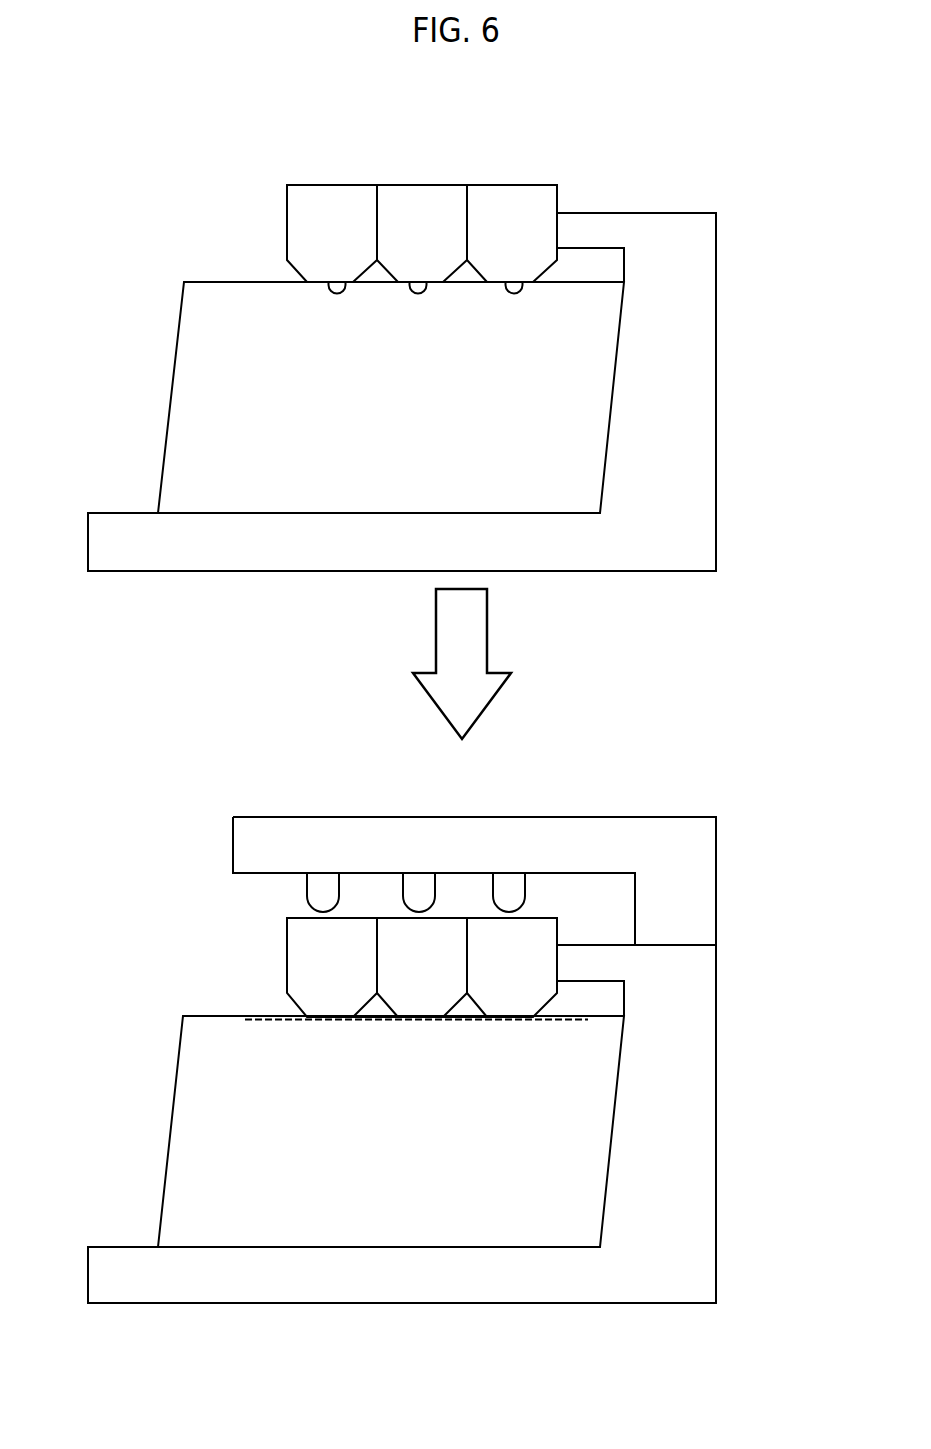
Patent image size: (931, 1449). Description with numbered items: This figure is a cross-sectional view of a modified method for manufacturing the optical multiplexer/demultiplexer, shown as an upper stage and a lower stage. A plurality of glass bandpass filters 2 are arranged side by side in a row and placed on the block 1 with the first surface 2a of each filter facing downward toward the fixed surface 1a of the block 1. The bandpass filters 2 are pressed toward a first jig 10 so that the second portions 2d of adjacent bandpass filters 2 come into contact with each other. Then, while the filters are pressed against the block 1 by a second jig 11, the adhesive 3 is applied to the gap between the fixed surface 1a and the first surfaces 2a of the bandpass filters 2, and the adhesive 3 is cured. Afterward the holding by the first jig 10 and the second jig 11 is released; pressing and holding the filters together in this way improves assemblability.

The block 1 is at (172, 397).
The fixed surface 1a is at (203, 1015).
The bandpass filter 2 is at (317, 205).
The first surface 2a is at (345, 282).
The second portion 2d is at (377, 227).
The adhesive 3 is at (382, 1020).
The first jig 10 is at (697, 364).
The second jig 11 is at (697, 886).